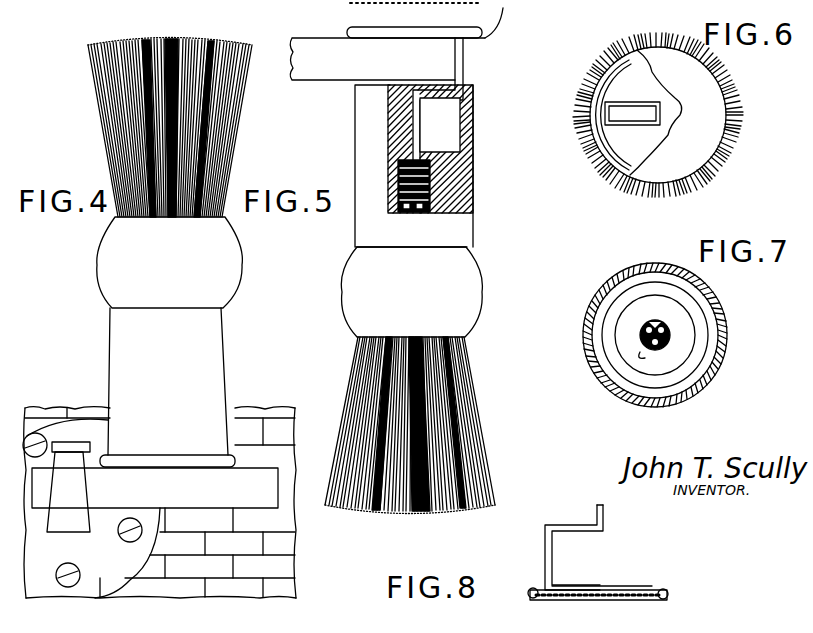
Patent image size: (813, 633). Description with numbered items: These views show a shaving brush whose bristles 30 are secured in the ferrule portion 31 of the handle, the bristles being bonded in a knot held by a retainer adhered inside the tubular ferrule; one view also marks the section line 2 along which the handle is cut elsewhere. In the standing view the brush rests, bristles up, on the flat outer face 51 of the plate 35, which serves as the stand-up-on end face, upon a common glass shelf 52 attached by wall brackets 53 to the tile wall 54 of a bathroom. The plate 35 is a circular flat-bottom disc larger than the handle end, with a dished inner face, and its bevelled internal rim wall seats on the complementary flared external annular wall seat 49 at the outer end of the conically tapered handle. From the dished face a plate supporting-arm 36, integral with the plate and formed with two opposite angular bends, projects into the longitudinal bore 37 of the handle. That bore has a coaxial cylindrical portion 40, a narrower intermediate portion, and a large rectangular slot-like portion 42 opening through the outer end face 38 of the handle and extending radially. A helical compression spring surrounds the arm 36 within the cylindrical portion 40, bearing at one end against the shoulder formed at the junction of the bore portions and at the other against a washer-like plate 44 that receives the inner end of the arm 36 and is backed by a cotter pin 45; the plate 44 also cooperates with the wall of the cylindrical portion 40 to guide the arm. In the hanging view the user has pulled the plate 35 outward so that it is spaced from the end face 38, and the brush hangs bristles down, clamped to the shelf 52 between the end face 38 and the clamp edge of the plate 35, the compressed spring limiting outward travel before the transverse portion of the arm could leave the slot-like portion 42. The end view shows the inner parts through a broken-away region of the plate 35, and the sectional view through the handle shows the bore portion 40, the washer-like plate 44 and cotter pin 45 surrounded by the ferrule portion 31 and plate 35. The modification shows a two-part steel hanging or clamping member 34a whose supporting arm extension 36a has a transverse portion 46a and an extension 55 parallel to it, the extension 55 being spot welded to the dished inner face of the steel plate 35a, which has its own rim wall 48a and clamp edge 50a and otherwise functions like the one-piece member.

In FIG. 4, the section line 2 is at (172, 3).
In FIG. 6, the bristles 30 is at (690, 186).
In FIG. 6, the ferrule portion 31 is at (618, 175).
In FIG. 7, the ferrule portion 31 is at (625, 275).
In FIG. 8, the brush hanging or clamping member 34a is at (605, 518).
In FIG. 5, the plate 35 is at (348, 30).
In FIG. 7, the plate 35 is at (705, 380).
In FIG. 8, the plate 35a is at (670, 597).
In FIG. 5, the plate supporting-arm 36 is at (455, 62).
In FIG. 6, the plate supporting-arm 36 is at (638, 110).
In FIG. 8, the supporting arm extension 36a is at (545, 550).
In FIG. 7, the longitudinal bore 37 is at (685, 345).
In FIG. 5, the outer end face of the handle 38 is at (470, 84).
In FIG. 6, the outer end face of the handle 38 is at (640, 147).
In FIG. 5, the cylindrical portion of the bore 40 is at (421, 212).
In FIG. 5, the slot-like portion of the bore 42 is at (455, 125).
In FIG. 7, the washer-like plate 44 is at (672, 332).
In FIG. 7, the cotter pin 45 is at (652, 360).
In FIG. 8, the transverse portion 46a is at (565, 525).
In FIG. 8, the internal annular rim wall 48a is at (653, 590).
In FIG. 5, the external annular wall seat 49 is at (364, 82).
In FIG. 6, the external annular wall seat 49 is at (600, 118).
In FIG. 8, the clamp edge or face 50a is at (665, 590).
In FIG. 6, the outer face 51 is at (715, 105).
In FIG. 4, the glass shelf 52 is at (155, 488).
In FIG. 5, the glass shelf 52 is at (387, 59).
In FIG. 4, the wall brackets 53 is at (42, 418).
In FIG. 4, the tile wall 54 is at (253, 425).
In FIG. 8, the extension 55 is at (585, 588).